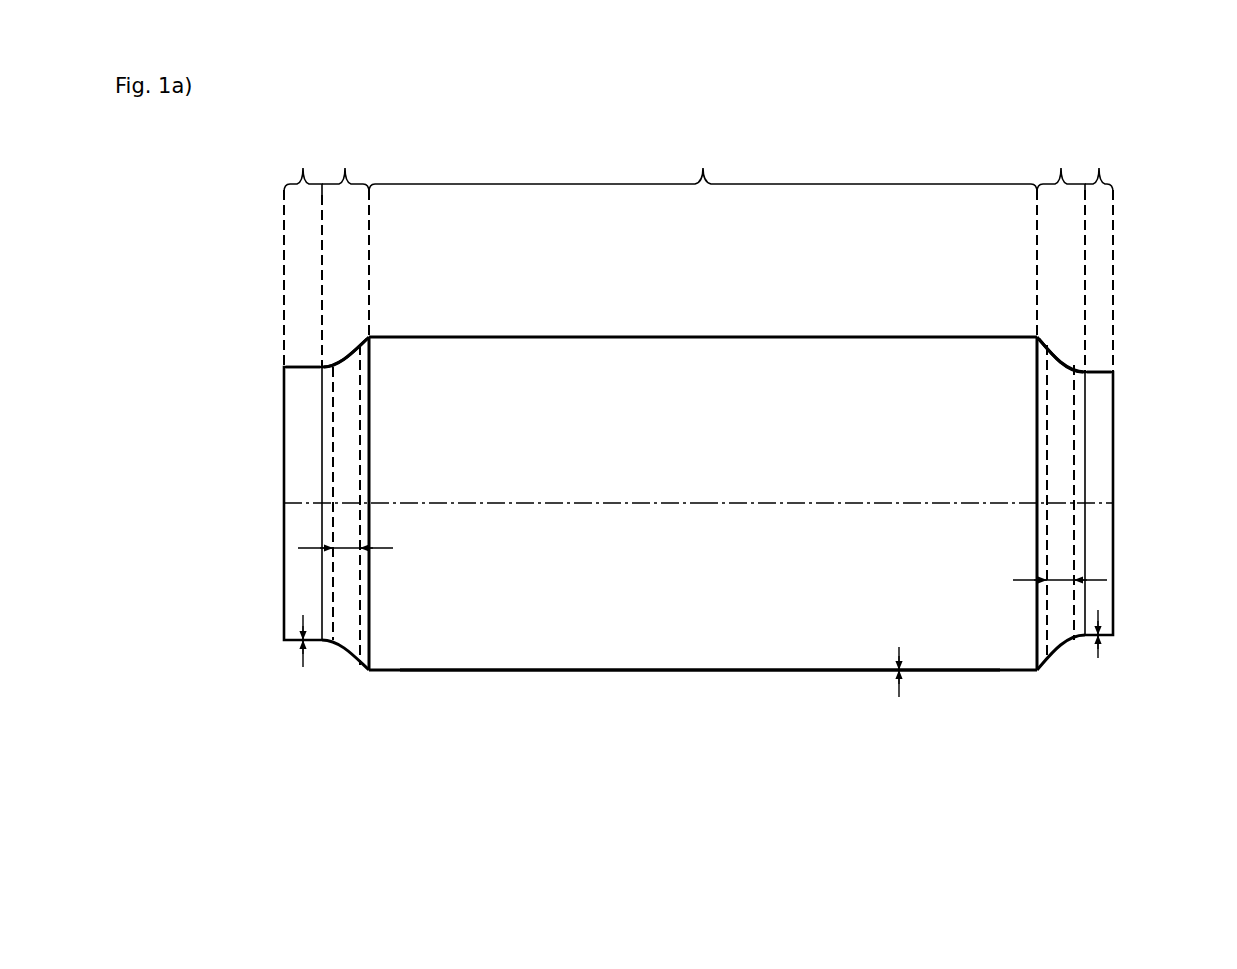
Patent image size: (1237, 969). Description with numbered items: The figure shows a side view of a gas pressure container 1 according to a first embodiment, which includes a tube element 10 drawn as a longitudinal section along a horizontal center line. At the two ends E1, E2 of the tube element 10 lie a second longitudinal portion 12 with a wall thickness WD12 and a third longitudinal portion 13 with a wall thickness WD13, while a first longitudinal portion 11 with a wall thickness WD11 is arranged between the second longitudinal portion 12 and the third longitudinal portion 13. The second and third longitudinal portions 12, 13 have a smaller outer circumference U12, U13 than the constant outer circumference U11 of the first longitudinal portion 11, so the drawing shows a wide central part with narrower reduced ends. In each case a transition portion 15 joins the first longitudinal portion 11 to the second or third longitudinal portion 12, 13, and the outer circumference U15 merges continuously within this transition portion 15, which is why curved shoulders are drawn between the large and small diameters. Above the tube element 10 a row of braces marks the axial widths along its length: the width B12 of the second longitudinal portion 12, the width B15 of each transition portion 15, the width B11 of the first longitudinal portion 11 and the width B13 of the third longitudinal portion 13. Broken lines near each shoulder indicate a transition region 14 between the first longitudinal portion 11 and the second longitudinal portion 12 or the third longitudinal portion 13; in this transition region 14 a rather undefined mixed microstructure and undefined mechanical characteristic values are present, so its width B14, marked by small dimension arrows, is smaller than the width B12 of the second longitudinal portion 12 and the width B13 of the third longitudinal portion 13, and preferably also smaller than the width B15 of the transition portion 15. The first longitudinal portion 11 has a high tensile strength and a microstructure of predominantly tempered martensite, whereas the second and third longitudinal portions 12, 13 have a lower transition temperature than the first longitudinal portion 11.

The gas pressure container 1 is at (874, 91).
The tube element 10 is at (710, 558).
The first longitudinal portion 11 is at (780, 638).
The second longitudinal portion 12 is at (305, 397).
The third longitudinal portion 13 is at (1102, 440).
The transition region 14 is at (350, 482).
The transition portion 15 is at (365, 603).
The width of the first longitudinal portion B11 is at (703, 167).
The width of the second longitudinal portion B12 is at (302, 169).
The width of the third longitudinal portion B13 is at (1105, 167).
The width of the transition region B14 is at (388, 550).
The width of the transition portion B15 is at (703, 169).
The end of the tube element E1 is at (249, 516).
The end of the tube element E2 is at (1157, 516).
The outer circumference of the first longitudinal portion U11 is at (598, 676).
The outer circumference of the second longitudinal portion U12 is at (303, 365).
The outer circumference of the third longitudinal portion U13 is at (1097, 370).
The outer circumference of the transition portion U15 is at (328, 365).
The wall thickness of the first longitudinal portion WD11 is at (907, 688).
The wall thickness of the second longitudinal portion WD12 is at (303, 662).
The wall thickness of the third longitudinal portion WD13 is at (1098, 657).